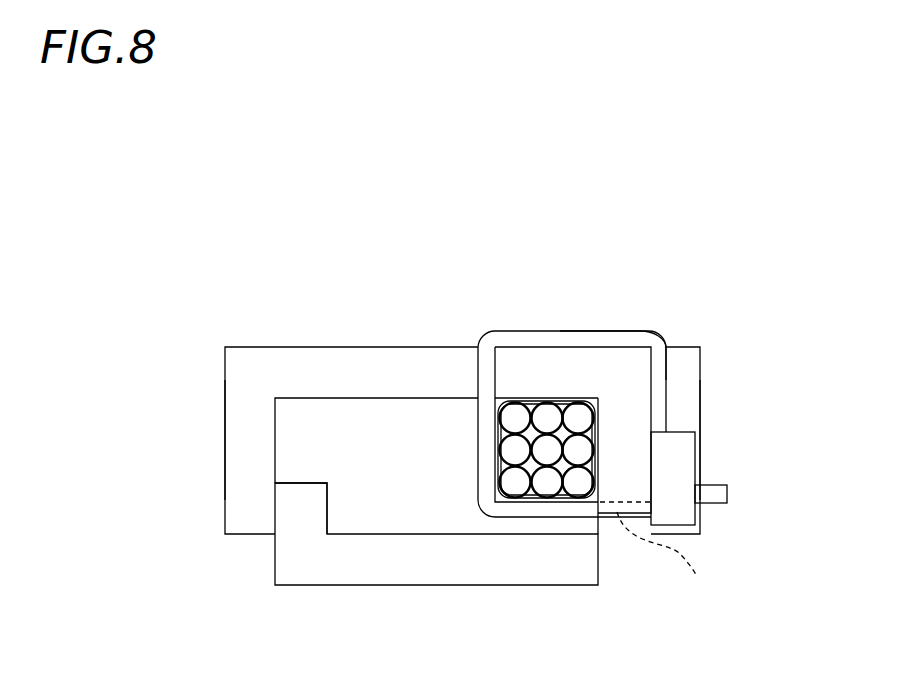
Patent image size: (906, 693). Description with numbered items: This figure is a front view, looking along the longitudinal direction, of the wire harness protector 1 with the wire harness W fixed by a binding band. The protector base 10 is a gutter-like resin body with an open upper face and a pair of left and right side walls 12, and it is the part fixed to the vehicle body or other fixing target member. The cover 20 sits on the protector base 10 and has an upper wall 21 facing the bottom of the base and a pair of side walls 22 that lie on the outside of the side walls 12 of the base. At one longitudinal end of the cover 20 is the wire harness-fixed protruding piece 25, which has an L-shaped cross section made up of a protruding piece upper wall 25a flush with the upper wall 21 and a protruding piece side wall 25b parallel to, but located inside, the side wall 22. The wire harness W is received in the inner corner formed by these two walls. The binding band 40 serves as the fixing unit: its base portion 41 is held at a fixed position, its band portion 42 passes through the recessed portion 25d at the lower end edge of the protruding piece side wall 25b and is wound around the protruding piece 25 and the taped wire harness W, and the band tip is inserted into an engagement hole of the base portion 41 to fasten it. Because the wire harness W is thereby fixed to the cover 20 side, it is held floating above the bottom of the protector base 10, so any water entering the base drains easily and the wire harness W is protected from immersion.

The wire harness protector 1 is at (120, 468).
The protector base 10 is at (273, 562).
The side wall 12 is at (302, 505).
The cover 20 is at (223, 471).
The upper wall 21 is at (378, 372).
The side wall 22 is at (248, 443).
The wire harness-fixed protruding piece 25 is at (512, 338).
The protruding piece upper wall 25a is at (530, 372).
The protruding piece side wall 25b is at (620, 453).
The recessed portion 25d is at (664, 557).
The binding band 40 is at (603, 327).
The base portion 41 is at (673, 510).
The band portion 42 is at (646, 338).
The wire harness W is at (547, 415).